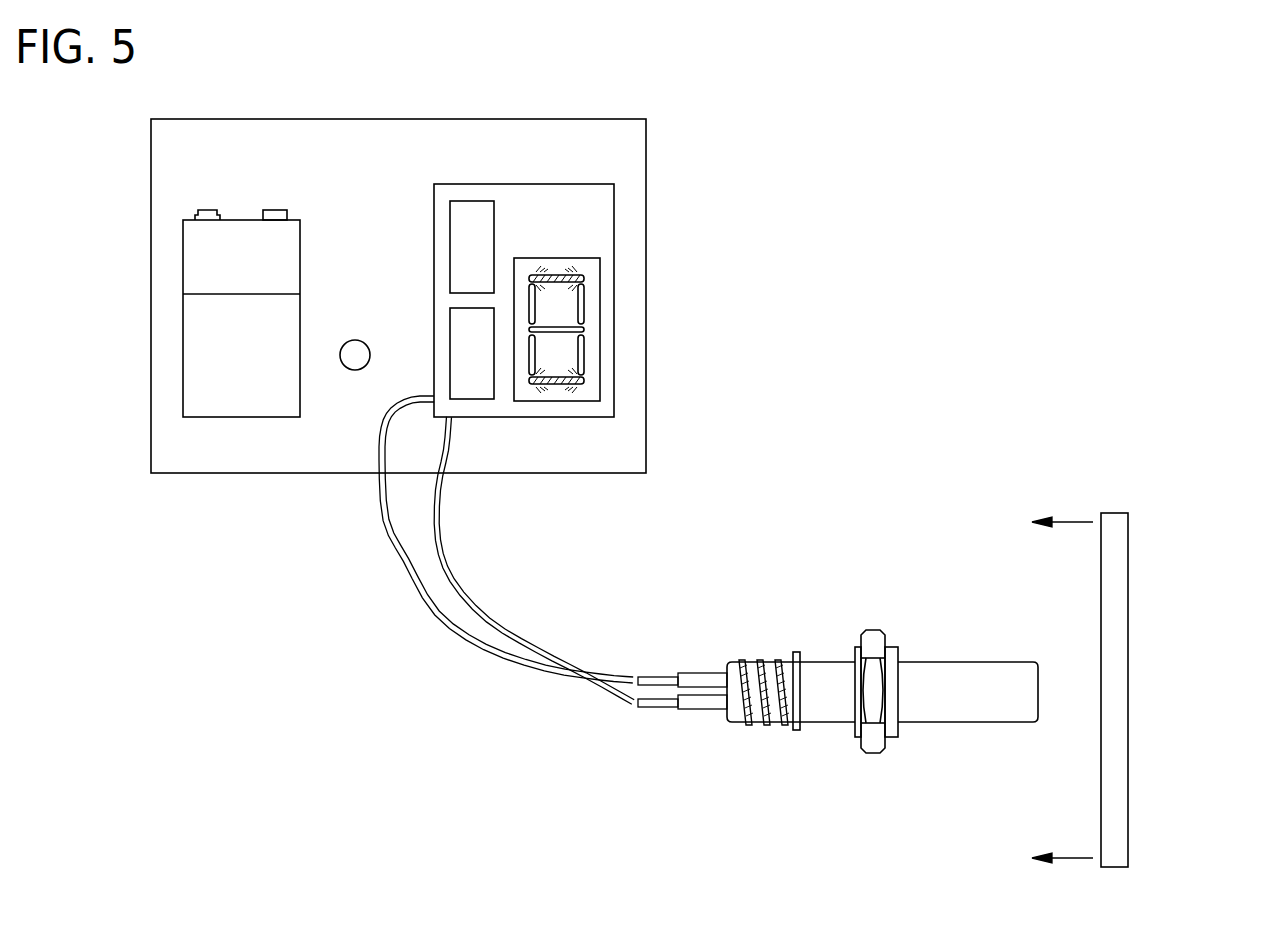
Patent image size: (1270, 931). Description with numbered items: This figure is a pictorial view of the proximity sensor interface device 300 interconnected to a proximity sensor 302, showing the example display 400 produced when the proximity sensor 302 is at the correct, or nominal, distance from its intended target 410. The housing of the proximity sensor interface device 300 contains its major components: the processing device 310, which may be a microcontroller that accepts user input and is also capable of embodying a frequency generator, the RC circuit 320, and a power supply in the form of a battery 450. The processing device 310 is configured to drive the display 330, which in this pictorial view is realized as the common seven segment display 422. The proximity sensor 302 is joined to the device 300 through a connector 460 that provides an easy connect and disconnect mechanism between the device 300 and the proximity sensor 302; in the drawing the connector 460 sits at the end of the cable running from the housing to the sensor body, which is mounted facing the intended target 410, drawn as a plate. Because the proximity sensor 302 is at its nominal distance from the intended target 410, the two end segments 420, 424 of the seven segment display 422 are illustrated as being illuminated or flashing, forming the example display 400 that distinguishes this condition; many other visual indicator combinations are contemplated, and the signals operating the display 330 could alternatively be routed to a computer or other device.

The proximity sensor interface device 300 is at (646, 155).
The proximity sensor 302 is at (967, 722).
The processing device 310 is at (464, 201).
The RC circuit 320 is at (475, 399).
The display 330 is at (600, 393).
The example display 400 is at (651, 335).
The intended target 410 is at (1128, 690).
The end segment 420 is at (561, 275).
The seven segment display 422 is at (612, 365).
The end segment 424 is at (558, 384).
The battery 450 is at (183, 355).
The connector 460 is at (693, 709).